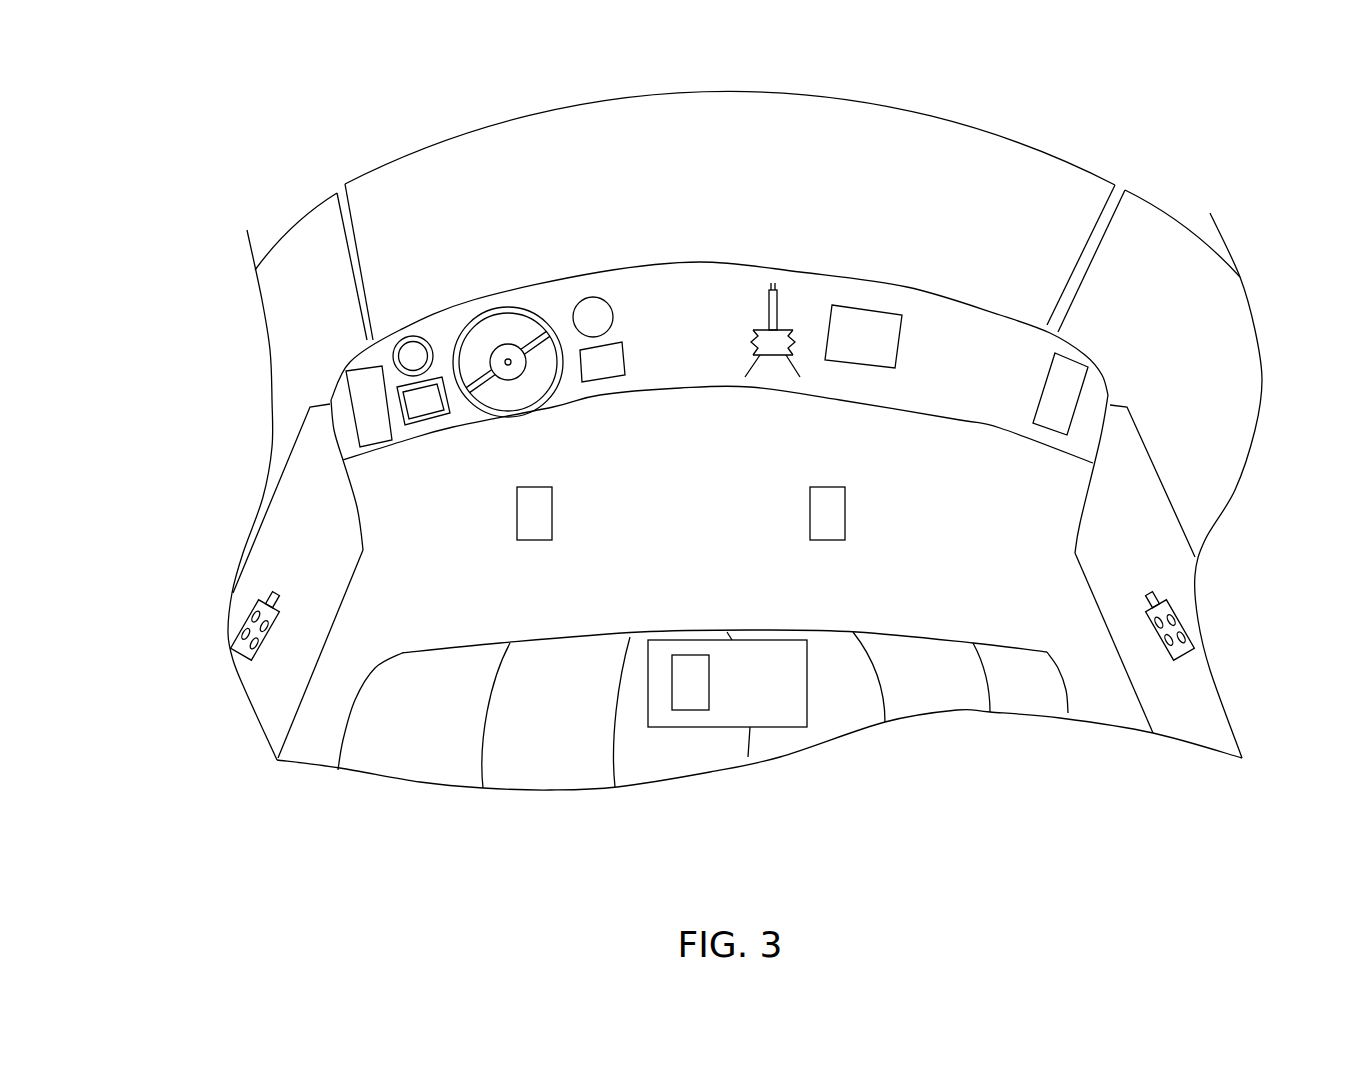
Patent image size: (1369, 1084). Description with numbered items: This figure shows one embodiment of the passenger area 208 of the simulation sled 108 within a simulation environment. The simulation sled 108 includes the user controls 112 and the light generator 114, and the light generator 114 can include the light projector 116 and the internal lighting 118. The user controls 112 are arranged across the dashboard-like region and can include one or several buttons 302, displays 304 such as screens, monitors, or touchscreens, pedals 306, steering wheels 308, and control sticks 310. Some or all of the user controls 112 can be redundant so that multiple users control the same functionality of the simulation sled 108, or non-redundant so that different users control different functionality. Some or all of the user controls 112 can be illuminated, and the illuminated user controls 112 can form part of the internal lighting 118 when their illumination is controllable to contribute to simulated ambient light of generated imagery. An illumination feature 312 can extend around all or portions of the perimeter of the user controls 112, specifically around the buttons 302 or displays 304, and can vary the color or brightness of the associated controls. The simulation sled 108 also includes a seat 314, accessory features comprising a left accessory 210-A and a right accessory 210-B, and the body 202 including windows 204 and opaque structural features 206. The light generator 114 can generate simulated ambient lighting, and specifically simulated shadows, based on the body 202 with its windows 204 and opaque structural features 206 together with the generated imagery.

The simulation sled 108 is at (1148, 116).
The user controls 112 is at (557, 303).
The light generator 114 is at (765, 697).
The light projector 116 is at (692, 692).
The internal lighting 118 is at (368, 405).
The body 202 is at (215, 103).
The windows 204 is at (300, 245).
The opaque structural features 206 is at (350, 218).
The passenger area 208 is at (993, 582).
The left accessory 210-A is at (243, 620).
The right accessory 210-B is at (1182, 615).
The buttons 302 is at (412, 352).
The displays 304 is at (596, 312).
The pedals 306 is at (533, 487).
The steering wheels 308 is at (483, 412).
The control sticks 310 is at (768, 306).
The illumination feature 312 is at (368, 353).
The seat 314 is at (450, 737).